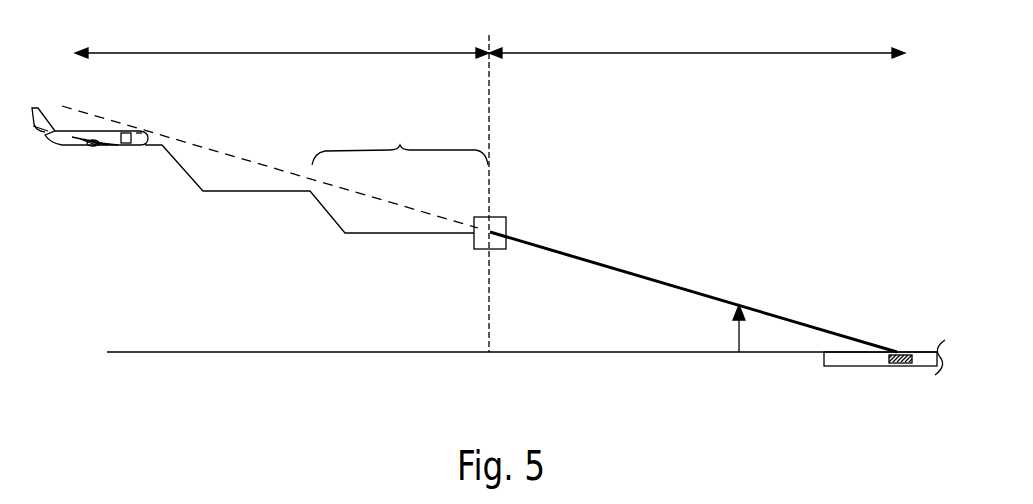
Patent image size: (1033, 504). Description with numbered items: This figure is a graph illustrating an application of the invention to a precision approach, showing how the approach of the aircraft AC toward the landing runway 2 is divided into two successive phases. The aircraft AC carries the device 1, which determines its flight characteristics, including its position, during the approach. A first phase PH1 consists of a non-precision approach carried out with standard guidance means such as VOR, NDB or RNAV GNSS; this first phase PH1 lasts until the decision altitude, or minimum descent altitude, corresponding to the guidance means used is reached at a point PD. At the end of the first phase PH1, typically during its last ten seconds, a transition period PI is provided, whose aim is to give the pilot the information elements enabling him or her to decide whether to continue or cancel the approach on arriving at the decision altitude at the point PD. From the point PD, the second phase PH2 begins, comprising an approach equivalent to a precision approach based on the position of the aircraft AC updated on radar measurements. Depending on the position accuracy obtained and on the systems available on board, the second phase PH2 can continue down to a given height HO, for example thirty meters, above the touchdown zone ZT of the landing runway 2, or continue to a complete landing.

The device 1 is at (126, 132).
The aircraft AC is at (118, 148).
The transition period PI is at (400, 140).
The point PD is at (508, 220).
The first phase PH1 is at (282, 39).
The second phase PH2 is at (697, 39).
The height HO is at (736, 333).
The landing runway 2 is at (870, 367).
The touchdown zone ZT is at (903, 367).